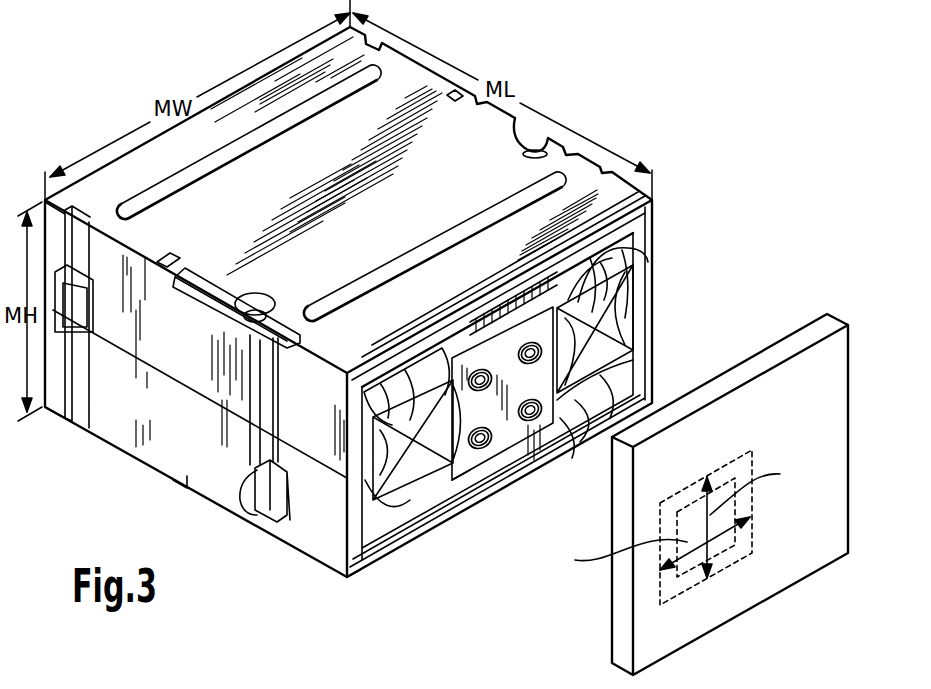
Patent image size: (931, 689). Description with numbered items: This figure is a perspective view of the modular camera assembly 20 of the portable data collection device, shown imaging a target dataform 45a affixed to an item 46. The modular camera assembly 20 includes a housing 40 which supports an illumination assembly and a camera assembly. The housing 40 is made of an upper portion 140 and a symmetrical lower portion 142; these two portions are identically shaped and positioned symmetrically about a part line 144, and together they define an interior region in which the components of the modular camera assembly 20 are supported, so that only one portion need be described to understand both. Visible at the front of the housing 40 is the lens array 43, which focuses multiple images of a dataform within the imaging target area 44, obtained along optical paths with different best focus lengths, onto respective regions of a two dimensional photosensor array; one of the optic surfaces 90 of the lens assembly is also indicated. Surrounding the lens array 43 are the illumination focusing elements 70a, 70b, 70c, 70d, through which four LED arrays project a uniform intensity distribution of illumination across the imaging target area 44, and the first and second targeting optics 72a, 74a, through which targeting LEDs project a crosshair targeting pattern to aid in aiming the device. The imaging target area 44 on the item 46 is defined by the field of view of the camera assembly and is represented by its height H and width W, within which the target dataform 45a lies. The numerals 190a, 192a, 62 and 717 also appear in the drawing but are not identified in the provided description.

The modular camera assembly 20 is at (385, 302).
The housing 40 is at (652, 126).
The upper portion 140 is at (660, 205).
The lower portion 142 is at (308, 587).
The part line 144 is at (187, 388).
The mounting bracket 190a is at (95, 294).
The side latch 192a is at (258, 452).
The first targeting optic 72a is at (352, 512).
The illumination focusing element 70a is at (407, 373).
The illumination focusing element 70b is at (608, 262).
The illumination focusing element 70c is at (407, 490).
The illumination focusing element 70d is at (575, 405).
The second targeting optic 74a is at (603, 337).
The fan housing 62 is at (630, 296).
The support strip 717 is at (495, 320).
The optic surface 90 is at (500, 432).
The lens array 43 is at (478, 468).
The item 46 is at (807, 542).
The imaging target area 44 is at (722, 572).
The target dataform 45a is at (720, 552).